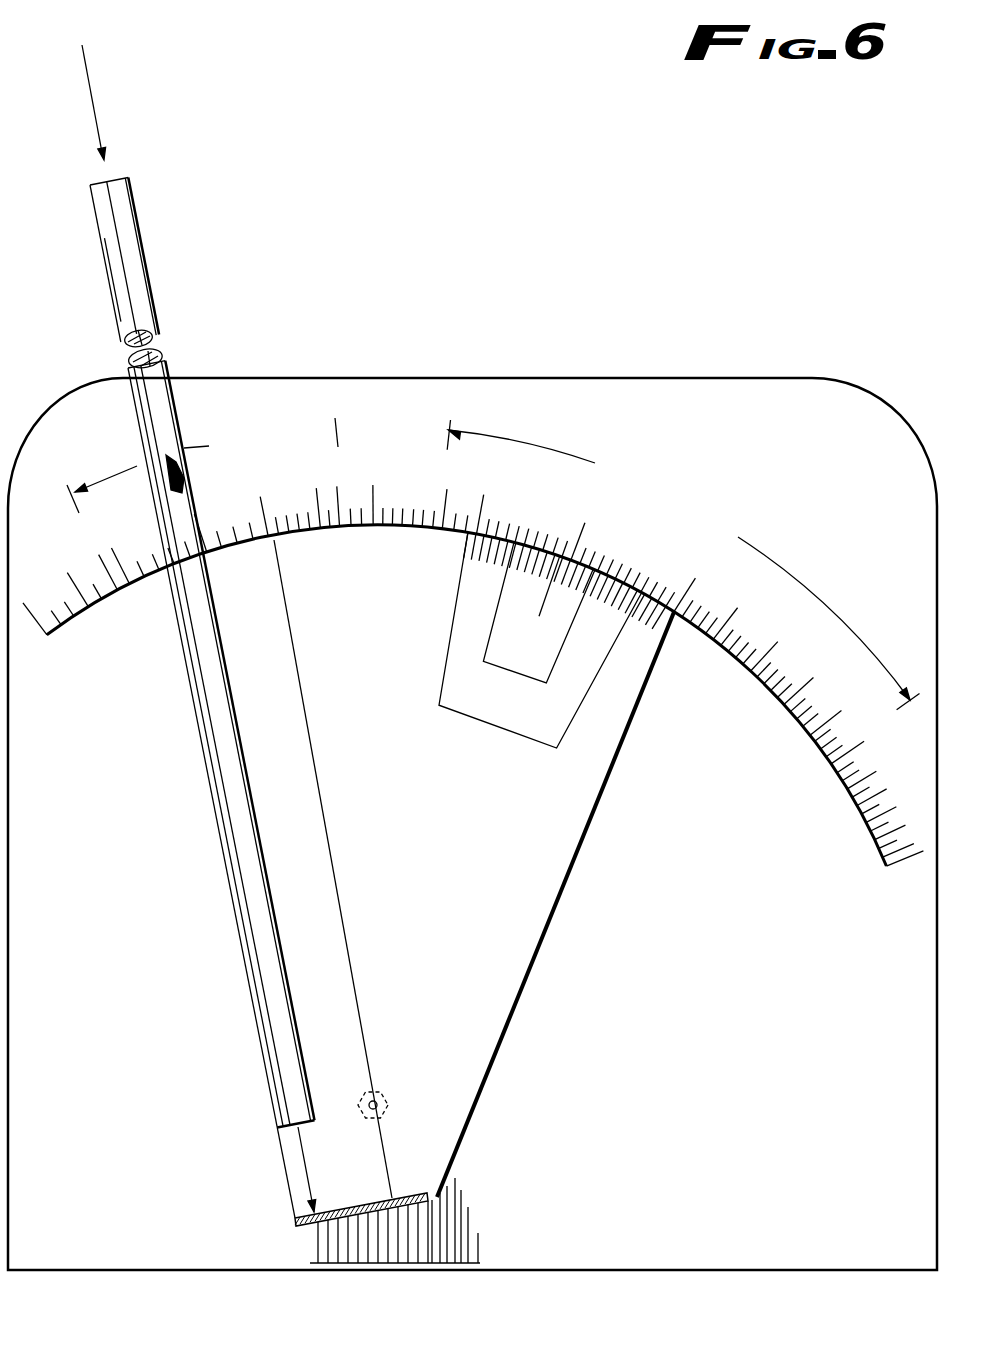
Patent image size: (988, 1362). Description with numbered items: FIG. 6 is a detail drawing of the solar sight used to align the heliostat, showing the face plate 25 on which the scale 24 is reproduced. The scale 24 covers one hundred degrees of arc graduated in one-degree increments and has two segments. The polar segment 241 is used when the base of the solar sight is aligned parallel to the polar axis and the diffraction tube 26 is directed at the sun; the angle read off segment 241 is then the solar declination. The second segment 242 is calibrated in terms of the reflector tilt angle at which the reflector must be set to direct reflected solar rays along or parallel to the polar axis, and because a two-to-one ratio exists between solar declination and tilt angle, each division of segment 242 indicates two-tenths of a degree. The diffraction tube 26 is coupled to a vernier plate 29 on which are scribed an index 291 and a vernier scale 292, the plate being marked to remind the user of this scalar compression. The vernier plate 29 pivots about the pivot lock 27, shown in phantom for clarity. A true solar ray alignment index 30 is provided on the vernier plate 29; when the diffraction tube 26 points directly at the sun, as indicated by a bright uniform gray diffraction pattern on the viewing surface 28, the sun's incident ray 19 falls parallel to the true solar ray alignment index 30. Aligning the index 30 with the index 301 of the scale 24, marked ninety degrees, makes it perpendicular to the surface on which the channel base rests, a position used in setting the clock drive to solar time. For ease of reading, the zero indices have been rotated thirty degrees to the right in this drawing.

The incident ray 19 is at (90, 88).
The scale 24 is at (815, 548).
The polar segment 241 is at (560, 476).
The second segment 242 is at (133, 497).
The face plate 25 is at (472, 824).
The diffraction tube 26 is at (142, 248).
The pivot lock 27 is at (388, 1098).
The viewing surface 28 is at (340, 1205).
The vernier plate 29 is at (365, 869).
The index 291 is at (547, 588).
The vernier scale 292 is at (497, 556).
The true solar ray alignment index 30 is at (312, 720).
The index marked 90° 301 is at (392, 463).